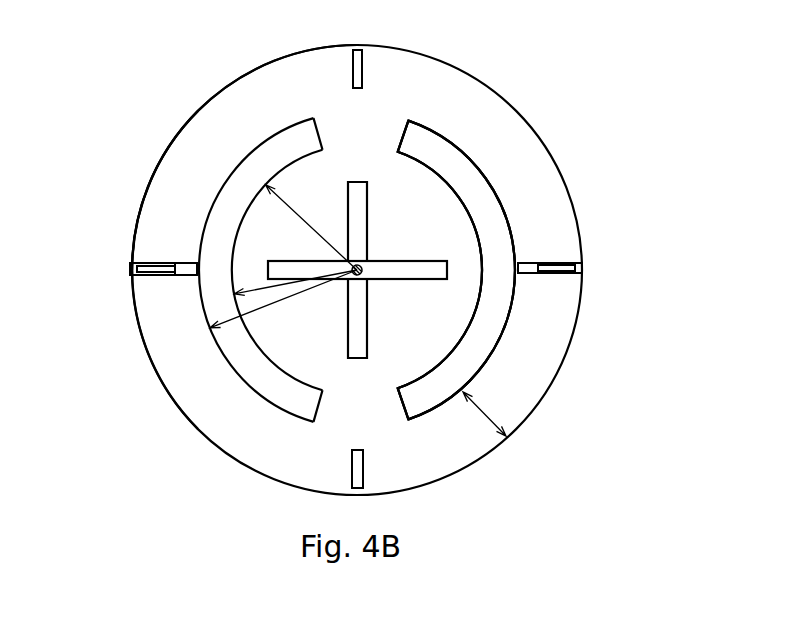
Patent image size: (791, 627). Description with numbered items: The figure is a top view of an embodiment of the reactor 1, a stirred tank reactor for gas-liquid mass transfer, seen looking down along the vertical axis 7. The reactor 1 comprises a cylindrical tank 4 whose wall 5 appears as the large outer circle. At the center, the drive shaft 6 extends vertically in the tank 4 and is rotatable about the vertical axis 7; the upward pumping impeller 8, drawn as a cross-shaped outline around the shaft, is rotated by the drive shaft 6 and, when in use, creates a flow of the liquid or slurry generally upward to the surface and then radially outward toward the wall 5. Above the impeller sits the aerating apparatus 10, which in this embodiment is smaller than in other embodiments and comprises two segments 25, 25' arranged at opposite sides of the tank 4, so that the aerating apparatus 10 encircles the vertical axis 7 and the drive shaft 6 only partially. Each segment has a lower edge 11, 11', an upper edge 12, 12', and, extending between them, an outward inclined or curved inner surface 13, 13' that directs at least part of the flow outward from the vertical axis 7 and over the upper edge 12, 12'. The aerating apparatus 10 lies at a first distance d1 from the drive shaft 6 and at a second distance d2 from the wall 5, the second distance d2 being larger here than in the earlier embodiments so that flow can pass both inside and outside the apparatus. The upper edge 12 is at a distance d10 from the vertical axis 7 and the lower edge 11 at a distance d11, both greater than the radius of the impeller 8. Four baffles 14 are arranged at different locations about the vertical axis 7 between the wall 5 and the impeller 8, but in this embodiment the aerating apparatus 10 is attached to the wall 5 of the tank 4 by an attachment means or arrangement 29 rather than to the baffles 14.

The reactor 1 is at (108, 102).
The tank 4 is at (227, 83).
The wall 5 is at (148, 177).
The drive shaft 6 is at (405, 168).
The vertical axis 7 is at (367, 262).
The upward pumping impeller 8 is at (362, 260).
The aerating apparatus 10 is at (462, 158).
The lower edge 11 is at (292, 270).
The lower edge 11' is at (440, 270).
The upper edge 12 is at (247, 297).
The upper edge 12' is at (513, 270).
The inner surface 13 is at (333, 390).
The inner surface 13' is at (428, 374).
The baffles 14 is at (358, 52).
The segment 25 is at (284, 81).
The segment 25' is at (454, 91).
The attachment means or arrangement 29 is at (180, 268).
The first distance d1 is at (323, 227).
The second distance d2 is at (483, 412).
The distance d10 is at (252, 306).
The distance d11 is at (253, 290).